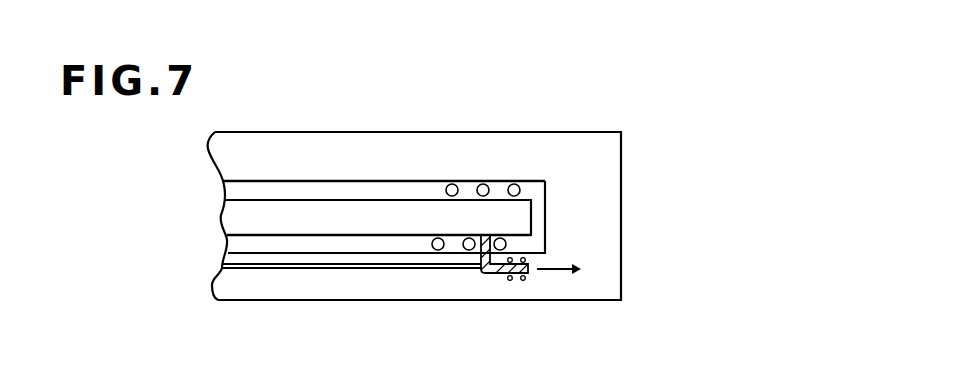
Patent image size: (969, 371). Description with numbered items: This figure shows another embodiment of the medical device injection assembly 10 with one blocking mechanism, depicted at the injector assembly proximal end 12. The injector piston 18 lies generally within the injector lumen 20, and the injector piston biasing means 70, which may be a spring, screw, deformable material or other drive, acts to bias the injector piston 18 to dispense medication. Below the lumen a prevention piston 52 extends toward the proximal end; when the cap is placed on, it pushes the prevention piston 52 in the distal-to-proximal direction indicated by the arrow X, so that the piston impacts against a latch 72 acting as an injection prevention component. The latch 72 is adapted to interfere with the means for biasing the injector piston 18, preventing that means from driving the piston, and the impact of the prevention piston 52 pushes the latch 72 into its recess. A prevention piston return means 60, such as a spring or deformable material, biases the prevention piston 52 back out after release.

The medical device injection assembly 10 is at (557, 70).
The injector assembly proximal end 12 is at (605, 128).
The injector piston 18 is at (513, 218).
The injector lumen 20 is at (535, 190).
The prevention piston 52 is at (322, 269).
The prevention piston return means 60 is at (522, 280).
The injector piston biasing means 70 is at (449, 158).
The latch 72 is at (487, 275).